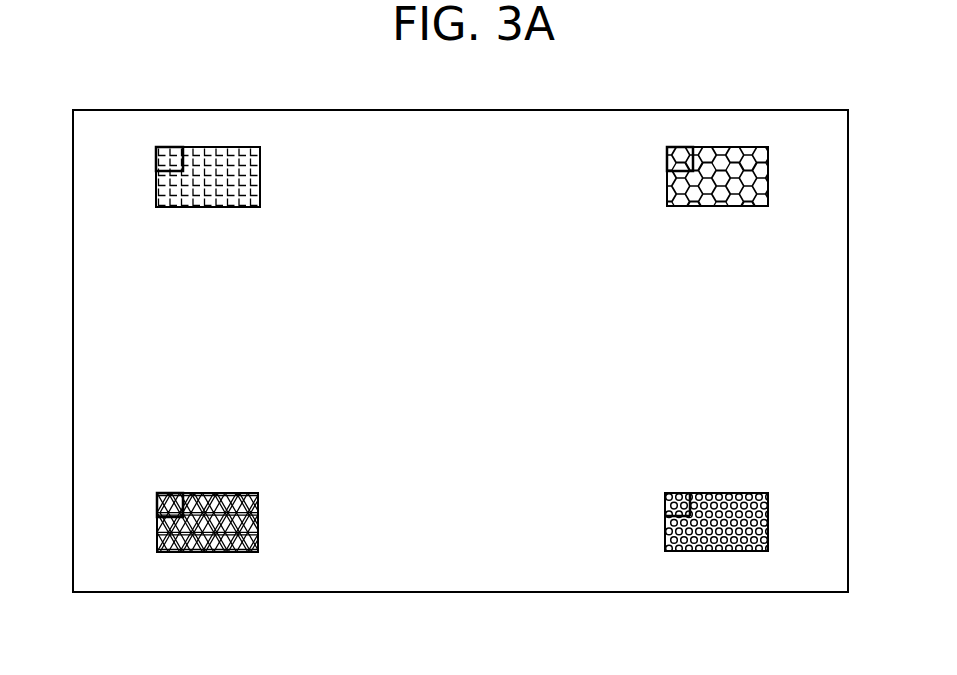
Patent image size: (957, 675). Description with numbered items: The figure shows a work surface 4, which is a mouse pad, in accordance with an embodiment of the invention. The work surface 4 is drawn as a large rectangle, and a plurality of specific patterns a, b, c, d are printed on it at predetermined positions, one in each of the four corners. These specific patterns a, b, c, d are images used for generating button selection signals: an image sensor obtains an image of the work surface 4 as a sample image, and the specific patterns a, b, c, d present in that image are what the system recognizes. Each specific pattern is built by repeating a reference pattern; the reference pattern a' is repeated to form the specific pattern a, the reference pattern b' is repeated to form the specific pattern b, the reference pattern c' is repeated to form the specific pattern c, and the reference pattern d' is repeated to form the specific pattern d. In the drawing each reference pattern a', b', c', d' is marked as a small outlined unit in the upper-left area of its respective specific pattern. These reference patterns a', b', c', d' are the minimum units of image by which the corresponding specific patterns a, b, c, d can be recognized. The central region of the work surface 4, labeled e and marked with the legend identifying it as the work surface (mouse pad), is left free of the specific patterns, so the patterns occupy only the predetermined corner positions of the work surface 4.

The work surface 4 is at (166, 110).
The specific pattern a is at (228, 177).
The reference pattern a' is at (146, 159).
The specific pattern b is at (734, 178).
The reference pattern b' is at (655, 159).
The specific pattern c is at (222, 522).
The reference pattern c' is at (146, 504).
The specific pattern d is at (737, 522).
The reference pattern d' is at (654, 503).
The work surface center area e is at (467, 462).